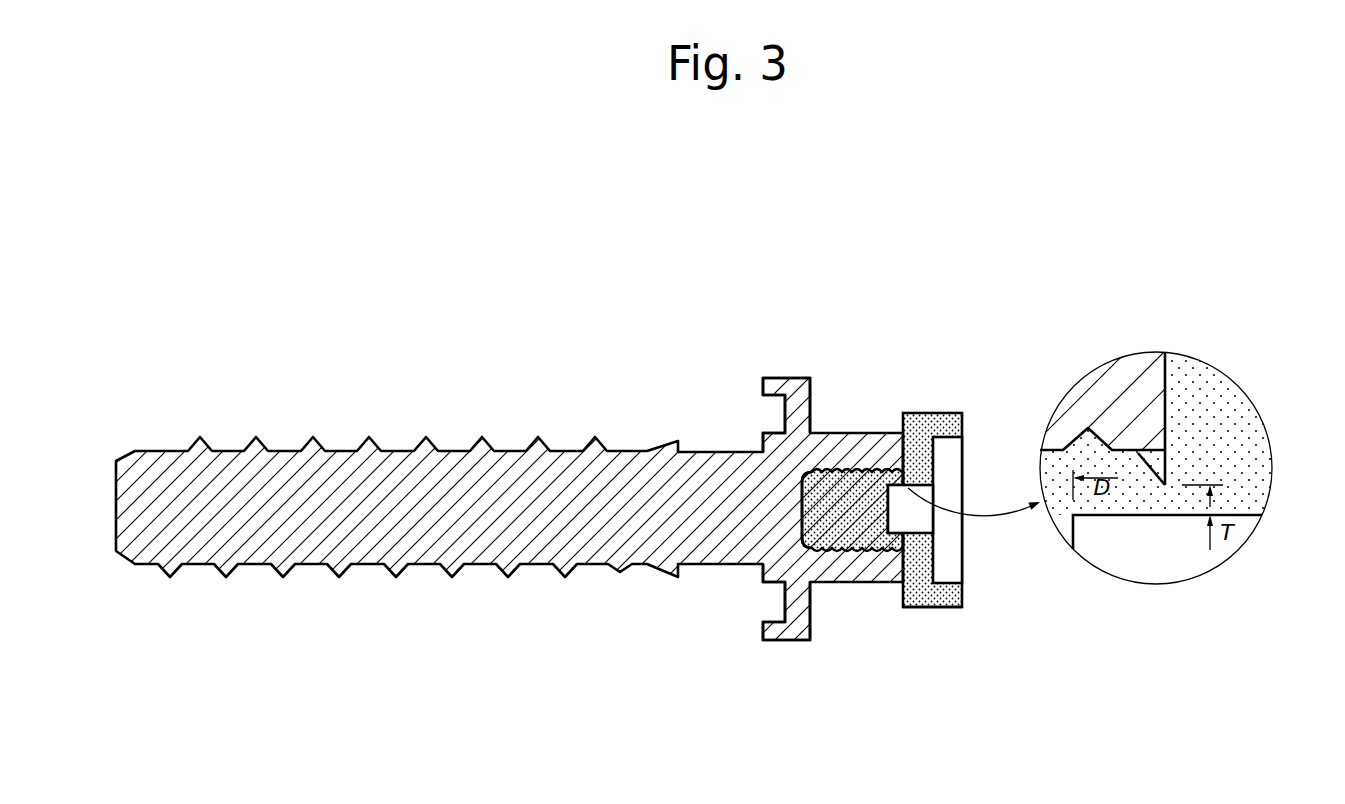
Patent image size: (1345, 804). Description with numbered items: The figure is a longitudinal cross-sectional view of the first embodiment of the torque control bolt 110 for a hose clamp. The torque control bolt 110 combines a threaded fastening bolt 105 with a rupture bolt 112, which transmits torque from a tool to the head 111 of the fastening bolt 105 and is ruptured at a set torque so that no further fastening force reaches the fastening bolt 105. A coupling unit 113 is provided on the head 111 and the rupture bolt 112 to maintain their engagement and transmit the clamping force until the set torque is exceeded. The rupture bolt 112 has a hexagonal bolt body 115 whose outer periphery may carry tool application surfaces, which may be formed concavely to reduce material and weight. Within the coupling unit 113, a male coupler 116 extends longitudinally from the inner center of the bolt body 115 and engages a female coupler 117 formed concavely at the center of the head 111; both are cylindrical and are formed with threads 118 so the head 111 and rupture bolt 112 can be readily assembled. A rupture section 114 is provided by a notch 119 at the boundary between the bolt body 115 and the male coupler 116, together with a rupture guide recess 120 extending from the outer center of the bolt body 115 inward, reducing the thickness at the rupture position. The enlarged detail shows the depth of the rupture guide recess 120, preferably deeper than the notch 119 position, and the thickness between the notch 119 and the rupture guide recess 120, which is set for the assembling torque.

The fastening bolt 105 is at (542, 570).
The torque control bolt 110 is at (1032, 614).
The head 111 is at (887, 442).
The rupture bolt 112 is at (938, 610).
The coupling unit 113 is at (693, 337).
The rupture section 114 is at (1108, 652).
The bolt body 115 is at (942, 420).
The male coupler 116 is at (813, 498).
The female coupler 117 is at (812, 515).
The threads 118 is at (837, 467).
The notch 119 is at (1158, 465).
The rupture guide recess 120 is at (1112, 555).